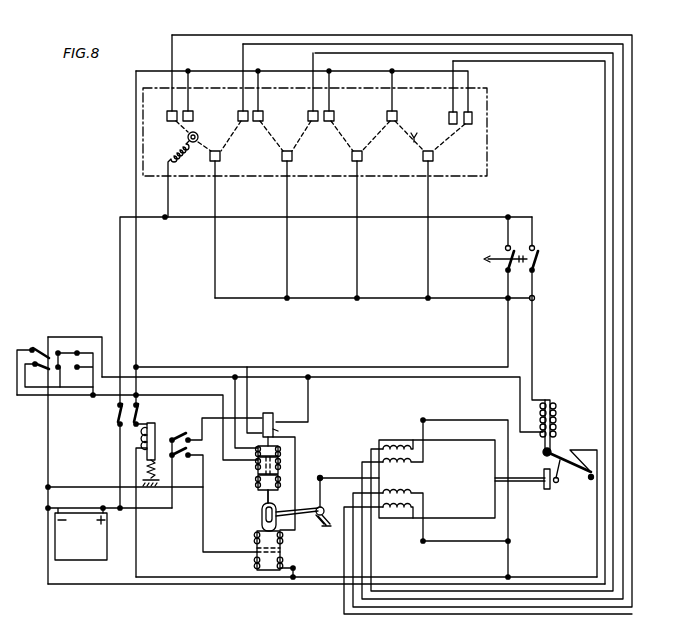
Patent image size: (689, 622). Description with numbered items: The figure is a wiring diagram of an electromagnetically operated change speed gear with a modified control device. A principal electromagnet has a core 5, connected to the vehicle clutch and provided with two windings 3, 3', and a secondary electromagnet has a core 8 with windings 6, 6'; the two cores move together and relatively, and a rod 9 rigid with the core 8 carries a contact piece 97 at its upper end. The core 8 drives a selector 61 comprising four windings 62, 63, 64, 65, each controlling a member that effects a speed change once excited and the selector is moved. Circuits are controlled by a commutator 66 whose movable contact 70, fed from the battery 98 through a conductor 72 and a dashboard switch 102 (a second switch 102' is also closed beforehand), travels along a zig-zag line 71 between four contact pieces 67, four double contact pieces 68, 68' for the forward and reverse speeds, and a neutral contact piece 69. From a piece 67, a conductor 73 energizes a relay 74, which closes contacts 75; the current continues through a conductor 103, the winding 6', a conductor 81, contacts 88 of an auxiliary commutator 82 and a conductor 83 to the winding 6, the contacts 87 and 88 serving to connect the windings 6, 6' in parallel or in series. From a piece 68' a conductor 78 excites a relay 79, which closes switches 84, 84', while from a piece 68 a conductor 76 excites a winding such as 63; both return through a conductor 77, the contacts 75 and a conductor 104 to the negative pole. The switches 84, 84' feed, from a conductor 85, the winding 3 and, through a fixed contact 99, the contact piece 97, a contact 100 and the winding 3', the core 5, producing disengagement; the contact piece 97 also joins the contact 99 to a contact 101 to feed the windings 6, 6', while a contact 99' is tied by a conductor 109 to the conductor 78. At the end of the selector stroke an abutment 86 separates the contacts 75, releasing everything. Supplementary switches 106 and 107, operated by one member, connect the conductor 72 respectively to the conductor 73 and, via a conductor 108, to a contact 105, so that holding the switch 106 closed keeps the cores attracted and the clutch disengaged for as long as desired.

The winding 3 is at (260, 555).
The winding 3' is at (275, 518).
The core of the principal electromagnet 5 is at (257, 549).
The winding 6 is at (287, 485).
The winding 6' is at (286, 445).
The core of the secondary electromagnet 8 is at (281, 466).
The rod 9 is at (262, 500).
The selector 61 is at (457, 441).
The winding 62 is at (392, 446).
The winding 63 is at (397, 464).
The winding 64 is at (414, 495).
The winding 65 is at (403, 513).
The commutator 66 is at (488, 100).
The contact pieces 67 is at (282, 156).
The double contact pieces 68 is at (209, 93).
The double contact pieces 68' is at (273, 110).
The simple contact piece 69 is at (397, 118).
The movable contact 70 is at (199, 138).
The zig-zag line 71 is at (416, 140).
The conductor 72 is at (120, 247).
The conductor 73 is at (452, 299).
The relay 74 is at (557, 413).
The contacts 75 is at (588, 480).
The conductor 76 is at (438, 52).
The conductor 77 is at (393, 578).
The conductor 78 is at (137, 273).
The relay 79 is at (157, 433).
The conductor 81 is at (168, 387).
The auxiliary commutator 82 is at (54, 352).
The conductor 83 is at (205, 397).
The switch 84 is at (213, 500).
The switch 84' is at (216, 453).
The conductor 85 is at (154, 509).
The abutment 86 is at (546, 490).
The contacts 87 is at (38, 346).
The contacts 88 is at (74, 352).
The contact piece 97 is at (276, 425).
The battery 98 is at (109, 533).
The fixed contact 99 is at (259, 417).
The fixed contact 99' is at (233, 470).
The fixed contact 100 is at (278, 437).
The fixed contact 101 is at (264, 412).
The manually operated switch 102 is at (100, 455).
The switch 102' is at (155, 487).
The conductor 103 is at (375, 378).
The conductor 104 is at (303, 590).
The fixed contact 105 is at (278, 430).
The supplementary switch 106 is at (539, 252).
The supplementary switch 107 is at (506, 265).
The conductor 108 is at (436, 367).
The conductor 109 is at (226, 367).